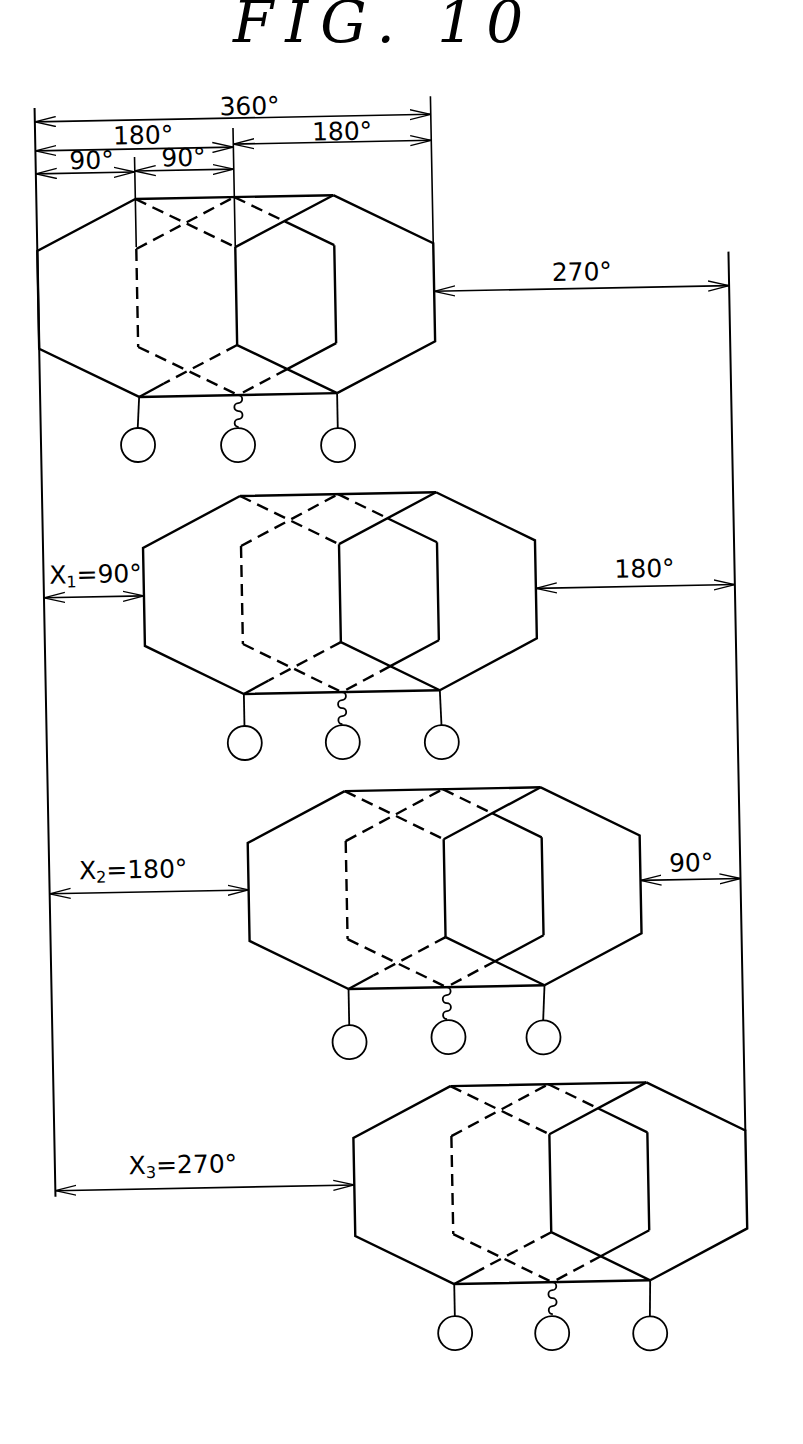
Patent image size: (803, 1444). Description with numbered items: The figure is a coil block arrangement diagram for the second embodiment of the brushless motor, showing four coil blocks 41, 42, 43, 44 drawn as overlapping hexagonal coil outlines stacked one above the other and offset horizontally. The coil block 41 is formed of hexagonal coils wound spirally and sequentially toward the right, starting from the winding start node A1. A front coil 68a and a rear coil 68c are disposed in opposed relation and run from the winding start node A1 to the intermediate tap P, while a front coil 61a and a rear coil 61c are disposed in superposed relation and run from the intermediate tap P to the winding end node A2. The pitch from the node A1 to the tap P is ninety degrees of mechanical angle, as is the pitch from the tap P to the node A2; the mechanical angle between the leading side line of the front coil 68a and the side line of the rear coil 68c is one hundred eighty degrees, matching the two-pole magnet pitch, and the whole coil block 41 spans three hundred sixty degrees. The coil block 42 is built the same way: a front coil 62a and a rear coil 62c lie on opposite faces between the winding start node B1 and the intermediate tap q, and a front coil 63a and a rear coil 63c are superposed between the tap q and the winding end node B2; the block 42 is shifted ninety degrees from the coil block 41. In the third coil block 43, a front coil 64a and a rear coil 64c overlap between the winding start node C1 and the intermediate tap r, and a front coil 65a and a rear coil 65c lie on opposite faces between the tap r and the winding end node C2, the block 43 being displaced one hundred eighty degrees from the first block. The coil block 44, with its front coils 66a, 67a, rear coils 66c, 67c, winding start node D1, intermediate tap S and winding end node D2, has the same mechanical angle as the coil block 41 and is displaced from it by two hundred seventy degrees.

The coil block 41 is at (69, 327).
The coil block 42 is at (144, 602).
The coil block 43 is at (243, 900).
The coil block 44 is at (343, 1207).
The front coil 68a is at (113, 367).
The rear coil 68c is at (179, 388).
The front coil 61a is at (303, 376).
The rear coil 61c is at (385, 318).
The front coil 62a is at (194, 668).
The rear coil 62c is at (275, 681).
The front coil 63a is at (405, 678).
The rear coil 63c is at (501, 664).
The front coil 64a is at (293, 963).
The rear coil 64c is at (379, 985).
The front coil 65a is at (494, 919).
The rear coil 65c is at (585, 964).
The front coil 66a is at (394, 1268).
The rear coil 66c is at (477, 1274).
The front coil 67a is at (604, 1271).
The rear coil 67c is at (691, 1261).
The winding start node A1 is at (137, 430).
The winding end node A2 is at (337, 428).
The intermediate tap P is at (237, 429).
The winding start node B1 is at (244, 727).
The winding end node B2 is at (441, 725).
The intermediate tap q is at (342, 726).
The winding start node C1 is at (349, 1024).
The winding end node C2 is at (543, 1020).
The intermediate tap r is at (448, 1021).
The winding start node D1 is at (454, 1317).
The winding end node D2 is at (649, 1315).
The intermediate tap S is at (551, 1316).